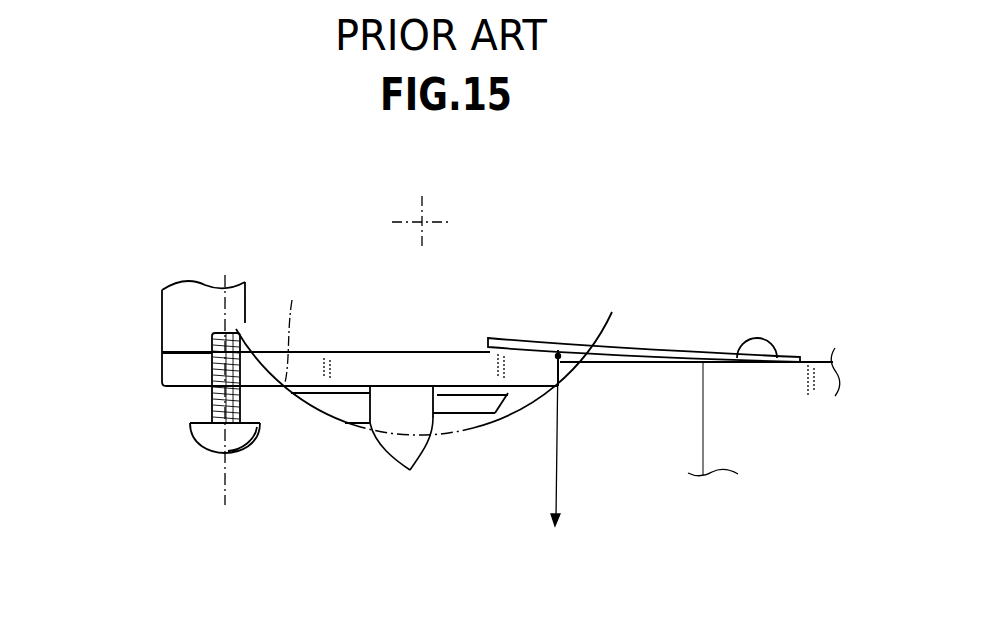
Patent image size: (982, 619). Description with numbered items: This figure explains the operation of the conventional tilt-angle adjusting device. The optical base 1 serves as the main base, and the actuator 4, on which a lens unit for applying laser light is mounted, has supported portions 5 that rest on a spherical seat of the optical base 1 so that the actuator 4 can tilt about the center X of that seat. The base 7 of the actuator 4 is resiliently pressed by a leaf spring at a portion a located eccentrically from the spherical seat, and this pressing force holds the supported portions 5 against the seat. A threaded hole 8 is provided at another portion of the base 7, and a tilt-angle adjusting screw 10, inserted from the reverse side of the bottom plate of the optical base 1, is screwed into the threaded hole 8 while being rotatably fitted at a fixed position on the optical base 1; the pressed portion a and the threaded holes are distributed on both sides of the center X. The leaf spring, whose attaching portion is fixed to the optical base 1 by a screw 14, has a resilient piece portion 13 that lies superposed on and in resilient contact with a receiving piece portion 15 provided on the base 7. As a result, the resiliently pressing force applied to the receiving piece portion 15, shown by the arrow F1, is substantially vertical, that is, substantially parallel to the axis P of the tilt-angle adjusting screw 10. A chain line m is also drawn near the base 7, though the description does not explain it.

The optical base 1 is at (820, 362).
The actuator 4 is at (160, 370).
The supported portions 5 is at (410, 470).
The base 7 is at (353, 352).
The threaded hole 8 is at (210, 337).
The tilt-angle adjusting screw 10 is at (214, 453).
The resilient piece portion 13 is at (513, 337).
The screw 14 is at (757, 338).
The receiving piece portion 15 is at (537, 386).
The resiliently pressed portion a is at (558, 352).
The center line m is at (297, 329).
The axis of the tilt-angle adjusting screw P is at (232, 470).
The center of the spherical seat X is at (422, 222).
The arrow indicating resiliently pressing force F1 is at (573, 446).